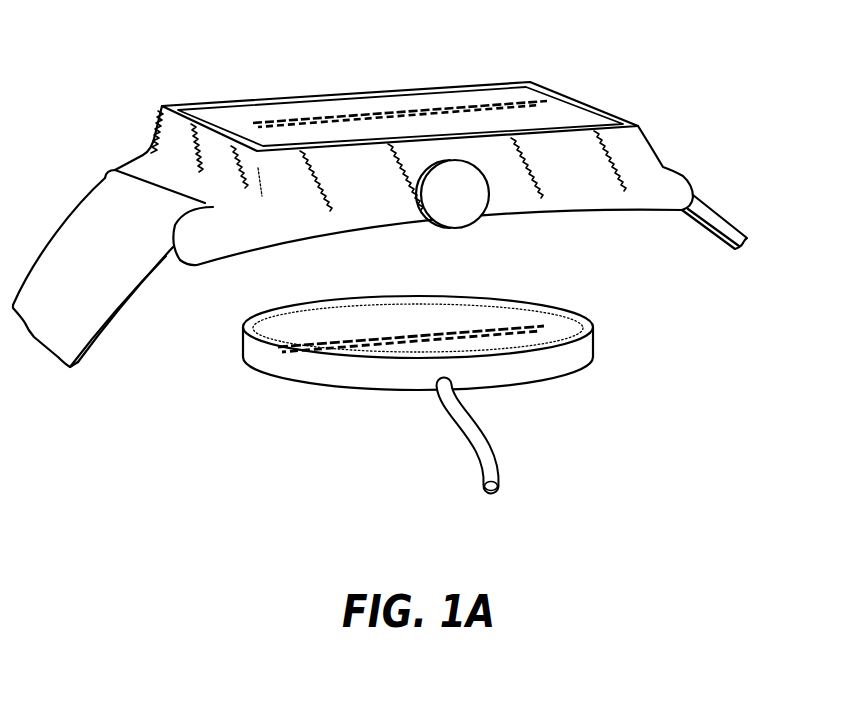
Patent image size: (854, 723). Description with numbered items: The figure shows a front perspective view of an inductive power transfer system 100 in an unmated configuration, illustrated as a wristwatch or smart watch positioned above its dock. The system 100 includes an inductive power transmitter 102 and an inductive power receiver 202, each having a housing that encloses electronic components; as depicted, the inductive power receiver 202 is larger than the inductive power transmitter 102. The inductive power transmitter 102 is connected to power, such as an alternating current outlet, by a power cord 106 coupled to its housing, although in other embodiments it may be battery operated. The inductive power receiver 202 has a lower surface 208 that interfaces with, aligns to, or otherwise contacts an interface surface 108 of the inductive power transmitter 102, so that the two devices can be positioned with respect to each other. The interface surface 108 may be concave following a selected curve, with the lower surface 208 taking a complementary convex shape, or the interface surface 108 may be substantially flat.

The inductive power transfer system 100 is at (103, 20).
The inductive power receiver 202 is at (158, 110).
The lower surface 208 is at (557, 216).
The inductive power transmitter 102 is at (530, 388).
The interface surface 108 is at (583, 314).
The power cord 106 is at (483, 488).